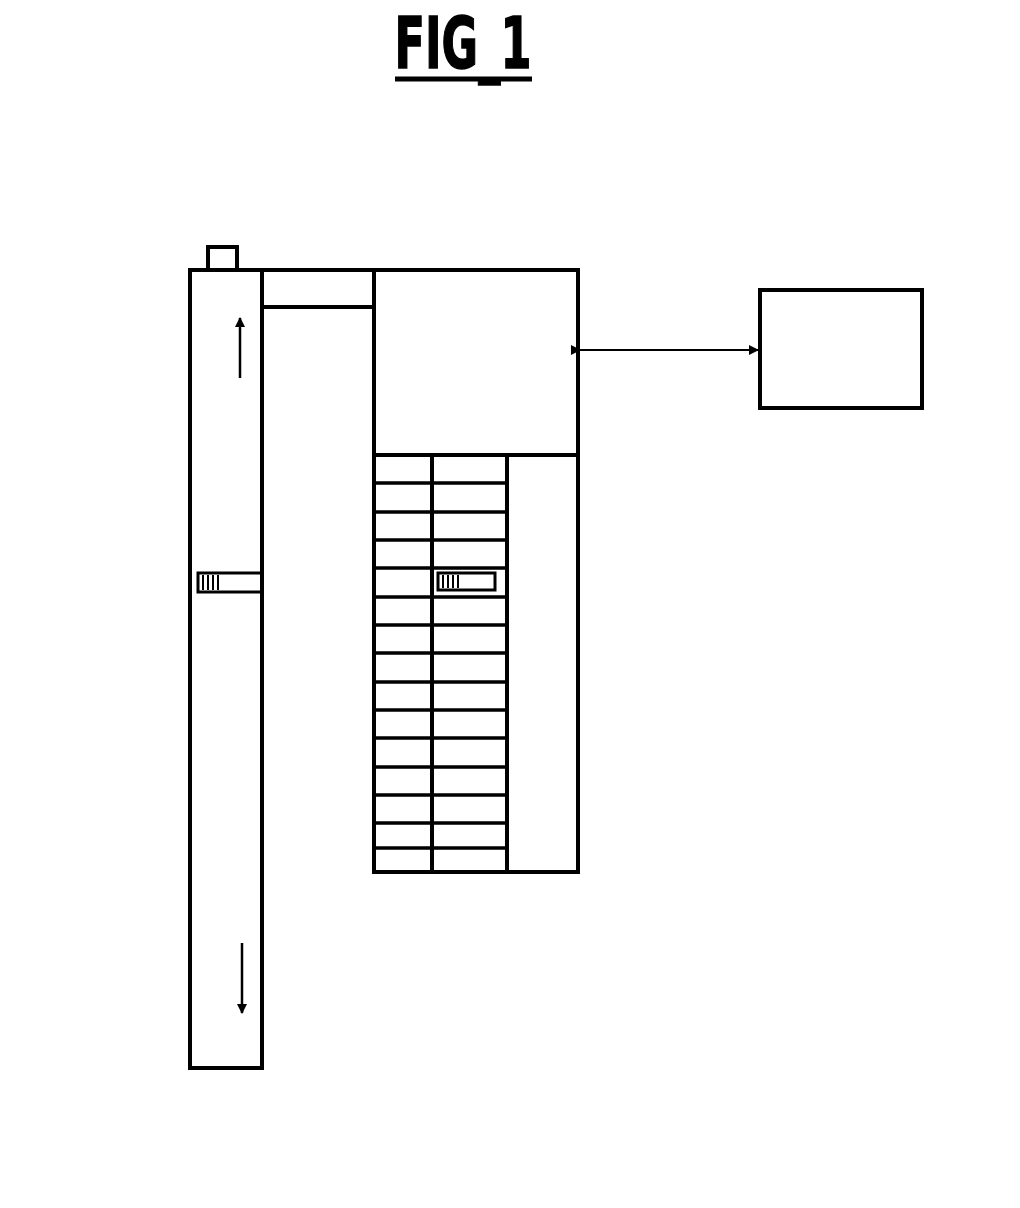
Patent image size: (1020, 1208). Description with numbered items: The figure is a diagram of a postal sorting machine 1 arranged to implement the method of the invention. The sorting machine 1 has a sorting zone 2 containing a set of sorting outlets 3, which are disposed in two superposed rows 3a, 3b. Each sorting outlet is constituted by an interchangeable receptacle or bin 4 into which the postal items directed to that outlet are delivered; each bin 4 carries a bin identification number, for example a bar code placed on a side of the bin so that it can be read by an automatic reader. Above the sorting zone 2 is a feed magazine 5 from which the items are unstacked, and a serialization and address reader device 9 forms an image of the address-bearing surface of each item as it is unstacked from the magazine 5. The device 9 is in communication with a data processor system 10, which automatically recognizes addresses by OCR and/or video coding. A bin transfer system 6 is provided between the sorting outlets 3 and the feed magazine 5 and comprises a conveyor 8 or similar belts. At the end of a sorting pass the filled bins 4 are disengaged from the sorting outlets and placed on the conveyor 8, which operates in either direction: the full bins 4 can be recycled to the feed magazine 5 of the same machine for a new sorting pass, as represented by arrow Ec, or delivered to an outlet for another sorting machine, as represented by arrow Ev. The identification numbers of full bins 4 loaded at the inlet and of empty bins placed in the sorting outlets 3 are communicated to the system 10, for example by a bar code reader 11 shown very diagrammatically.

The sorting machine 1 is at (410, 268).
The sorting zone 2 is at (582, 403).
The sorting outlets 3 is at (418, 808).
The first superposed row of sorting outlets 3a is at (488, 882).
The second superposed row of sorting outlets 3b is at (410, 882).
The bin 4 is at (495, 577).
The feed magazine 5 is at (333, 268).
The bin transfer system 6 is at (173, 443).
The conveyor 8 is at (208, 935).
The serialization and address reader device 9 is at (535, 338).
The data processor system 10 is at (846, 366).
The bar code reader 11 is at (228, 256).
The arrow Ec is at (238, 350).
The arrow Ev is at (246, 980).